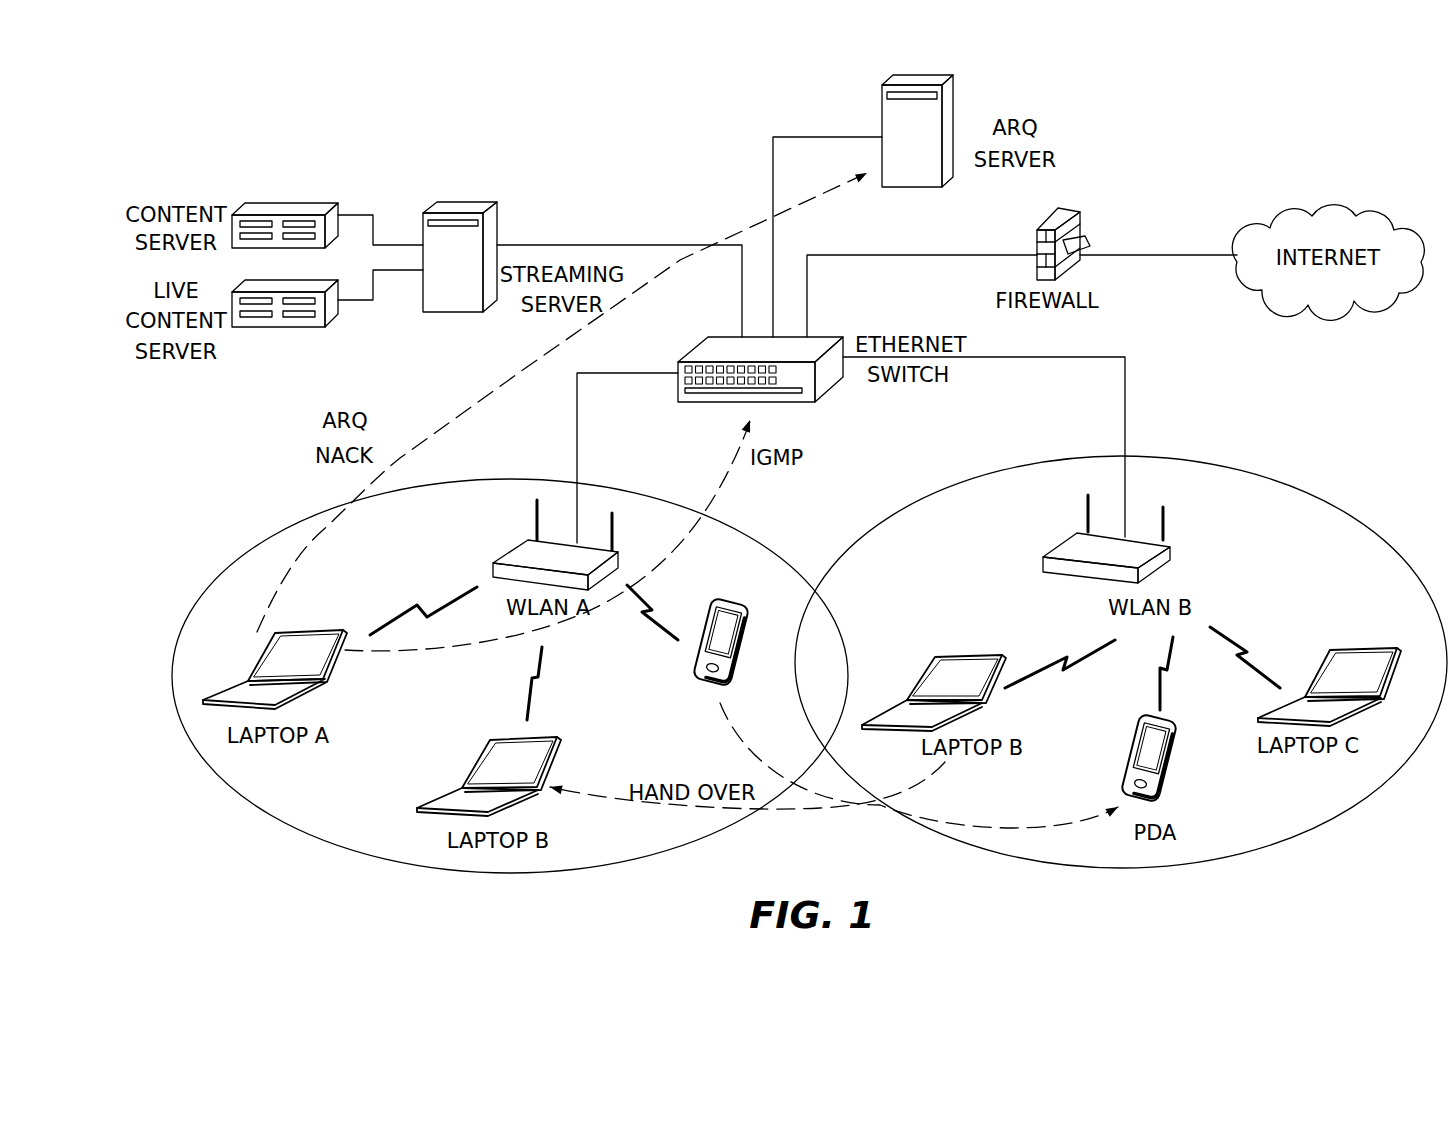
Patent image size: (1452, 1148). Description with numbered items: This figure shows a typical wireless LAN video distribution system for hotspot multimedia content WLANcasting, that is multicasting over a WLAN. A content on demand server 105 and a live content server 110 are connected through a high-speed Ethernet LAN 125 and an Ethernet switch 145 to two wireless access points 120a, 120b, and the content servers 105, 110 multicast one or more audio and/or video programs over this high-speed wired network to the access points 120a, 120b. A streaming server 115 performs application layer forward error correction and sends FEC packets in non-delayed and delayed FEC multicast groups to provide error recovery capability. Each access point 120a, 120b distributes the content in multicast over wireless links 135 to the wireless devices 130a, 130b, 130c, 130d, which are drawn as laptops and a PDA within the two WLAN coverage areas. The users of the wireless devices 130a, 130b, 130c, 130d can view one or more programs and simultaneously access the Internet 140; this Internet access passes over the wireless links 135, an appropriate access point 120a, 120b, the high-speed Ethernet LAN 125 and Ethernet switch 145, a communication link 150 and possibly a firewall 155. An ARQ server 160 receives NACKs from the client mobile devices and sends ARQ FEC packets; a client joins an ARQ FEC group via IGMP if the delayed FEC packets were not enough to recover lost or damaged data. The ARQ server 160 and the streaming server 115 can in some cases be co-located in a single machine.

The content on demand server 105 is at (287, 205).
The live content server 110 is at (270, 327).
The streaming server 115 is at (497, 232).
The wireless access point 120a is at (510, 553).
The wireless access point 120b is at (1063, 542).
The high-speed Ethernet LAN 125 is at (628, 375).
The wireless device 130a is at (303, 687).
The wireless device 130b is at (460, 790).
The wireless device 130c is at (1367, 648).
The wireless device 130d is at (700, 673).
The wireless link 135 is at (420, 607).
The Internet 140 is at (1363, 212).
The Ethernet switch 145 is at (718, 404).
The communication link 150 is at (860, 255).
The firewall 155 is at (1067, 208).
The ARQ server 160 is at (955, 103).